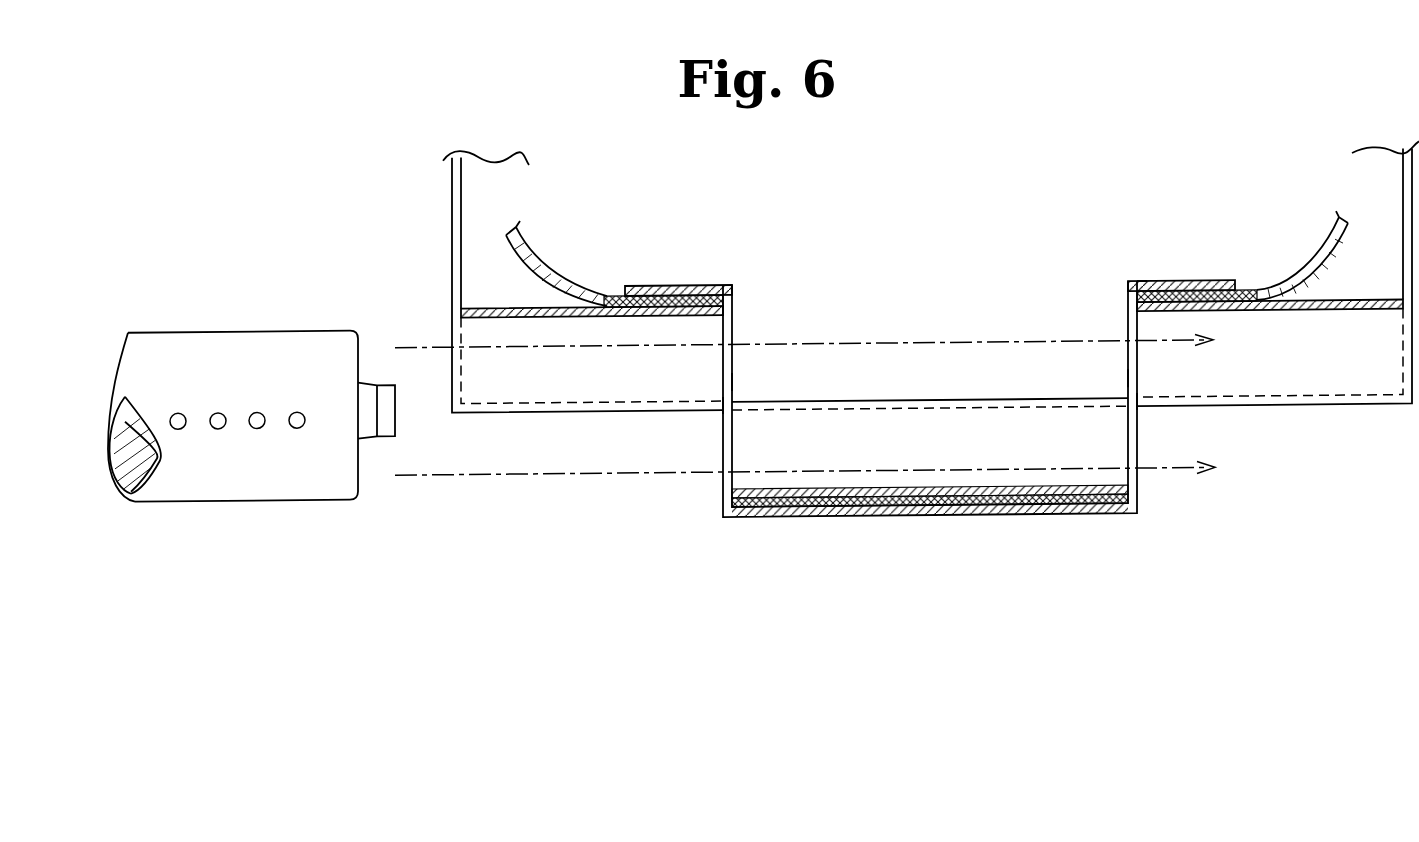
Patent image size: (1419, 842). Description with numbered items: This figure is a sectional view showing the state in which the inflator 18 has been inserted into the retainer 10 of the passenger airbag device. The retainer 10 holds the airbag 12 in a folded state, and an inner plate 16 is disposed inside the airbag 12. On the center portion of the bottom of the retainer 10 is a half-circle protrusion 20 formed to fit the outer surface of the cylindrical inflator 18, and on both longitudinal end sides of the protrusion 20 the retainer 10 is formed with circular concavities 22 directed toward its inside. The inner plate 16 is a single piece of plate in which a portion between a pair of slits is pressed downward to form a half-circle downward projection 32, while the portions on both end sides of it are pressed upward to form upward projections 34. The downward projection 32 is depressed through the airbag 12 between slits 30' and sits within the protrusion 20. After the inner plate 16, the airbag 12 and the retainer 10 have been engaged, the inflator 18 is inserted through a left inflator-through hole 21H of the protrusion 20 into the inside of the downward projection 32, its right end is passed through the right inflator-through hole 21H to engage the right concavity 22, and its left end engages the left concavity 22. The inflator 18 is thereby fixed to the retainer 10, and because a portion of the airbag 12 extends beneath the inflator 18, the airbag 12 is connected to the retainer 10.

The retainer 10 is at (446, 208).
The airbag 12 is at (548, 268).
The inner plate 16 is at (1146, 287).
The inflator 18 is at (272, 340).
The protrusion 20 is at (800, 526).
The inflator-through hole 21H is at (723, 448).
The concavity 22 is at (480, 328).
The slit 30' is at (930, 379).
The downward projection 32 is at (807, 498).
The upward projection 34 is at (1197, 294).